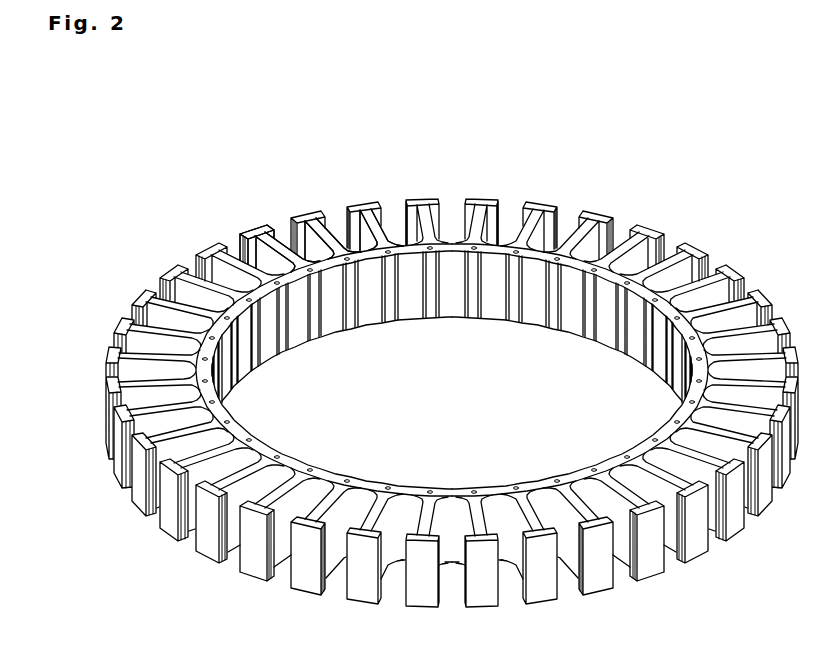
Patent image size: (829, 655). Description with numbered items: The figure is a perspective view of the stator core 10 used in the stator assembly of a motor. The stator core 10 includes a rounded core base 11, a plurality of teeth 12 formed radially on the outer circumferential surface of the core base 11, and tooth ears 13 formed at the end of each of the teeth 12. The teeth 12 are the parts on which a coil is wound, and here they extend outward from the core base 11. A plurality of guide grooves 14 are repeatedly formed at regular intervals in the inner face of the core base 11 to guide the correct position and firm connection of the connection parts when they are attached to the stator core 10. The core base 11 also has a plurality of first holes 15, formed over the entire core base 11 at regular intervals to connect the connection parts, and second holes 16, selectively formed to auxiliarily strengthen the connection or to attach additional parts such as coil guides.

The stator core 10 is at (452, 343).
The core base 11 is at (328, 263).
The teeth 12 is at (283, 250).
The tooth ears 13 is at (255, 236).
The guide grooves 14 is at (353, 320).
The first holes 15 is at (380, 252).
The second holes 16 is at (436, 247).